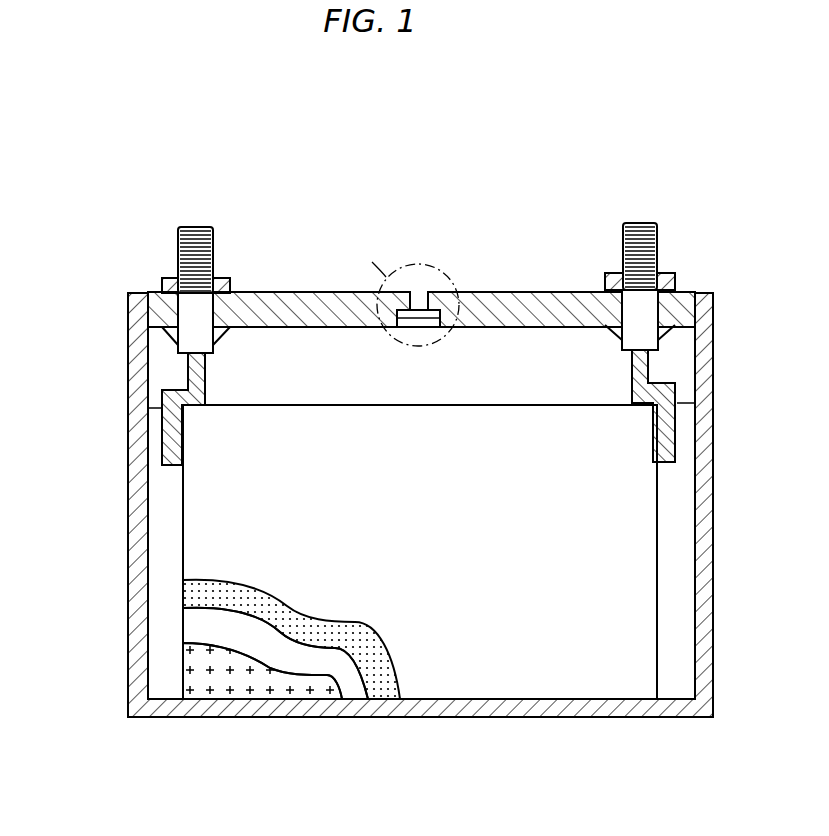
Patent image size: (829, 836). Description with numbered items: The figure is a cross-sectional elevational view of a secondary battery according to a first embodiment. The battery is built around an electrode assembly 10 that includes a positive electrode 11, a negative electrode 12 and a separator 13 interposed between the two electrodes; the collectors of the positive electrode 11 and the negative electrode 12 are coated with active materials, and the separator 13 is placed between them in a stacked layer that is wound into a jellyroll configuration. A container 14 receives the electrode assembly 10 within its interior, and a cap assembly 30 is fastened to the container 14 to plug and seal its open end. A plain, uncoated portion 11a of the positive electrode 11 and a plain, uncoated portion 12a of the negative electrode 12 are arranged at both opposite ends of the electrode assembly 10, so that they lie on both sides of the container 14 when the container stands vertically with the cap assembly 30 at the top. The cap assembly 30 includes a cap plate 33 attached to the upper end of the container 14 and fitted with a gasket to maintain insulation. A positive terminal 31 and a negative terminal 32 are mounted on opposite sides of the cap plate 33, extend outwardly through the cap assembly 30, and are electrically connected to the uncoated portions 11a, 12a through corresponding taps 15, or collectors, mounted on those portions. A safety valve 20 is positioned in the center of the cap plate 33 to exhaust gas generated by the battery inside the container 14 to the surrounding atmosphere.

The electrode assembly 10 is at (420, 596).
The positive electrode 11 is at (388, 697).
The uncoated portion of positive electrode 11a is at (165, 667).
The negative electrode 12 is at (246, 690).
The uncoated portion of negative electrode 12a is at (680, 655).
The separator 13 is at (348, 692).
The container 14 is at (707, 597).
The taps 15 is at (170, 440).
The safety valve 20 is at (409, 290).
The cap assembly 30 is at (421, 261).
The positive terminal 31 is at (191, 232).
The negative terminal 32 is at (649, 234).
The cap plate 33 is at (322, 292).